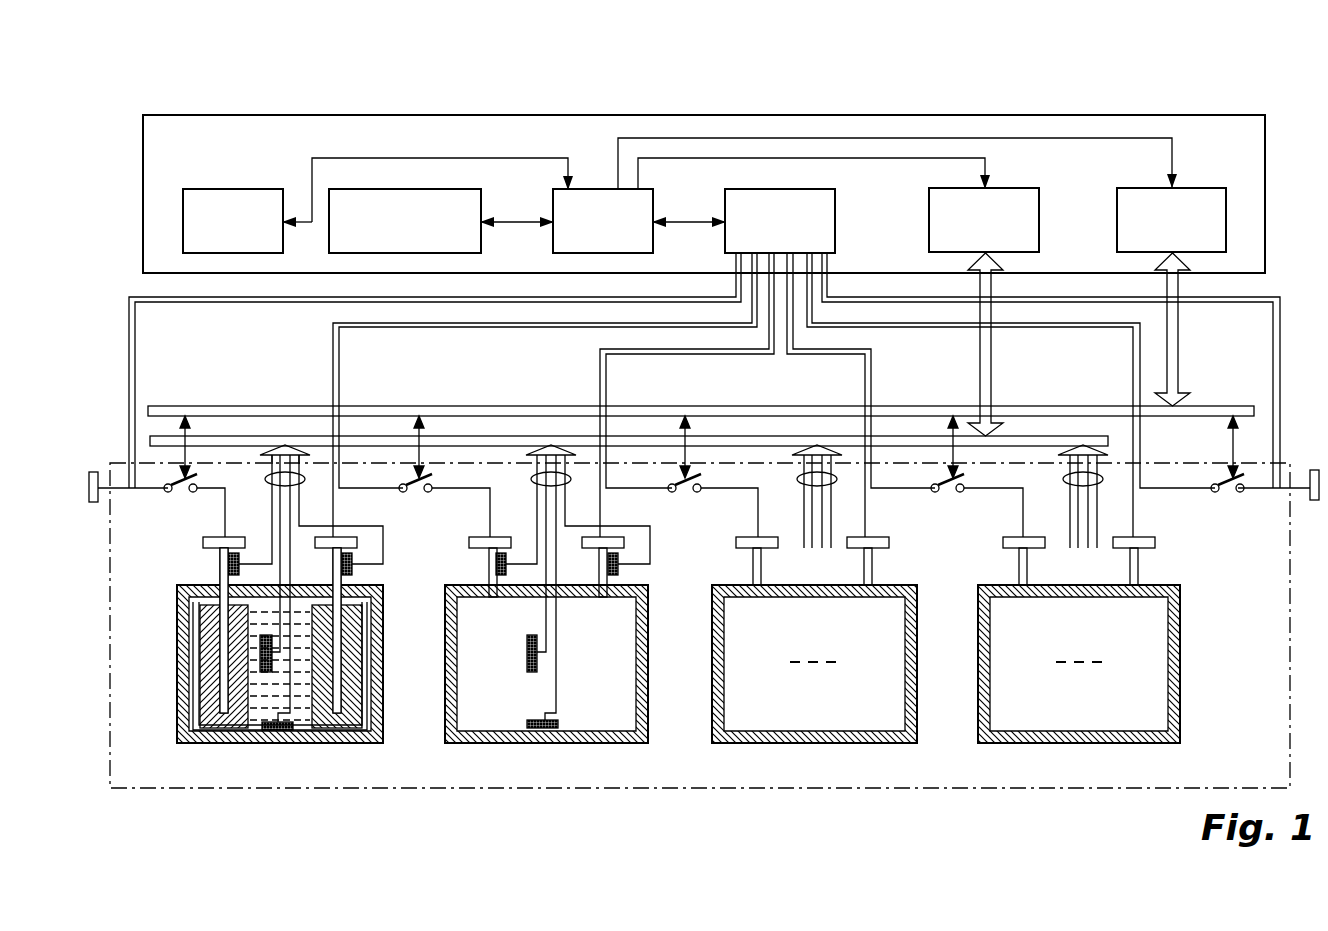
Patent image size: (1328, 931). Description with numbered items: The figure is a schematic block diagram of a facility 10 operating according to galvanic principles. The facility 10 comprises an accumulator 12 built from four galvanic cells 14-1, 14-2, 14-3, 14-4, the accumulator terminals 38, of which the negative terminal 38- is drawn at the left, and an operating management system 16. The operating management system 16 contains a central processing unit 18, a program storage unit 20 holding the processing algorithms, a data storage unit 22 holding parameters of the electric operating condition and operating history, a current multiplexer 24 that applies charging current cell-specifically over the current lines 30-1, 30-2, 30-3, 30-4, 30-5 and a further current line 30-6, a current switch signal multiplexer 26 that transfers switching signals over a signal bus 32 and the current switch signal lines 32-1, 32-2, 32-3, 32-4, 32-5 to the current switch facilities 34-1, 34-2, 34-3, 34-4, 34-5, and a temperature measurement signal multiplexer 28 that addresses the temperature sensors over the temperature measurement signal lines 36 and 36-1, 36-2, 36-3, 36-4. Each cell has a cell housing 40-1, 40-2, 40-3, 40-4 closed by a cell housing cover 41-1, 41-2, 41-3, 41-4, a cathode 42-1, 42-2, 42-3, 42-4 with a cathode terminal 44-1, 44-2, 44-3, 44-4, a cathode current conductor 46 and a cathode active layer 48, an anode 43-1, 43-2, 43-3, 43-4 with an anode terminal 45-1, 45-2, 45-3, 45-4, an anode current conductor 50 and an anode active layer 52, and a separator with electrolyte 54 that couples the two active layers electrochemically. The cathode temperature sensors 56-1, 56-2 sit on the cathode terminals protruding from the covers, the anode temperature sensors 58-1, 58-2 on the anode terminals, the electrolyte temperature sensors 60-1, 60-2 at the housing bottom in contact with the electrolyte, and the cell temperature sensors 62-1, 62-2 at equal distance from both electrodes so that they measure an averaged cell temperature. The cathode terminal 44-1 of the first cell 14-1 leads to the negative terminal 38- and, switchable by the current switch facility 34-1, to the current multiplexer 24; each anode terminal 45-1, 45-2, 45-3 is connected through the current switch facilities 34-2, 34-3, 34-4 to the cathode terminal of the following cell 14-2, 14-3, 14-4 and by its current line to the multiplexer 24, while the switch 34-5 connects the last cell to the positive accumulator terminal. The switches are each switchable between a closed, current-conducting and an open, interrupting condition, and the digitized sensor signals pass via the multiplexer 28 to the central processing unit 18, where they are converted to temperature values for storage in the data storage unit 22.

The facility operating according to galvanic principles 10 is at (1286, 280).
The accumulator 12 is at (996, 792).
The galvanic cell 14-1 is at (280, 745).
The galvanic cell 14-2 is at (545, 745).
The galvanic cell 14-3 is at (815, 745).
The galvanic cell 14-4 is at (1080, 745).
The operating management system 16 is at (1040, 112).
The central processing unit 18 is at (653, 200).
The program storage unit 20 is at (233, 189).
The data storage unit 22 is at (481, 201).
The current multiplexer 24 is at (835, 222).
The current switch signal multiplexer 26 is at (1212, 188).
The temperature measurement signal multiplexer 28 is at (1039, 216).
The current line 30-1 is at (129, 333).
The current line 30-2 is at (333, 351).
The current line 30-3 is at (600, 366).
The current line 30-4 is at (873, 360).
The current line 30-5 is at (1133, 363).
The current line 30-6 is at (1273, 352).
The current switch signal line 32 is at (400, 406).
The current switch signal line 32-1 is at (189, 436).
The current switch signal line 32-2 is at (423, 436).
The current switch signal line 32-3 is at (690, 436).
The current switch signal line 32-4 is at (950, 436).
The current switch signal line 32-5 is at (1230, 446).
The current switch facility 34-1 is at (172, 497).
The current switch facility 34-2 is at (410, 497).
The current switch facility 34-3 is at (680, 497).
The current switch facility 34-4 is at (945, 497).
The current switch facility 34-5 is at (1227, 497).
The temperature measurement signal line 36 is at (373, 436).
The temperature measurement signal line 36-1 is at (264, 473).
The temperature measurement signal line 36-2 is at (529, 473).
The temperature measurement signal line 36-3 is at (795, 473).
The temperature measurement signal line 36-4 is at (1060, 473).
The accumulator terminals 38 is at (700, 488).
The negative accumulator terminal 38- is at (93, 472).
The cell housing 40-1 is at (383, 649).
The cell housing 40-2 is at (648, 661).
The cell housing 40-3 is at (917, 661).
The cell housing 40-4 is at (1180, 656).
The cell housing cover 41-1 is at (180, 590).
The cell housing cover 41-2 is at (447, 590).
The cell housing cover 41-3 is at (714, 590).
The cell housing cover 41-4 is at (980, 590).
The cathode 42-1 is at (232, 535).
The cathode 42-2 is at (497, 535).
The cathode 42-3 is at (766, 556).
The cathode 42-4 is at (1030, 556).
The anode 43-1 is at (350, 535).
The anode 43-2 is at (619, 563).
The anode 43-3 is at (880, 556).
The anode 43-4 is at (1145, 556).
The cathode terminal 44-1 is at (203, 543).
The cathode terminal 44-2 is at (469, 543).
The cathode terminal 44-3 is at (770, 537).
The cathode terminal 44-4 is at (1035, 537).
The anode terminal 45-1 is at (357, 535).
The anode terminal 45-2 is at (607, 535).
The anode terminal 45-3 is at (880, 537).
The anode terminal 45-4 is at (1150, 537).
The cathode current conductor 46 is at (222, 643).
The cathode active layer 48 is at (199, 668).
The anode current conductor 50 is at (337, 668).
The anode active layer 52 is at (350, 697).
The electrolyte 54 is at (279, 666).
The cathode temperature sensor 56-1 is at (228, 564).
The cathode temperature sensor 56-2 is at (495, 597).
The anode temperature sensor 58-1 is at (342, 564).
The anode temperature sensor 58-2 is at (604, 597).
The electrolyte temperature sensor 60-1 is at (265, 733).
The electrolyte temperature sensor 60-2 is at (558, 724).
The cell temperature sensor 62-1 is at (258, 656).
The cell temperature sensor 62-2 is at (527, 666).